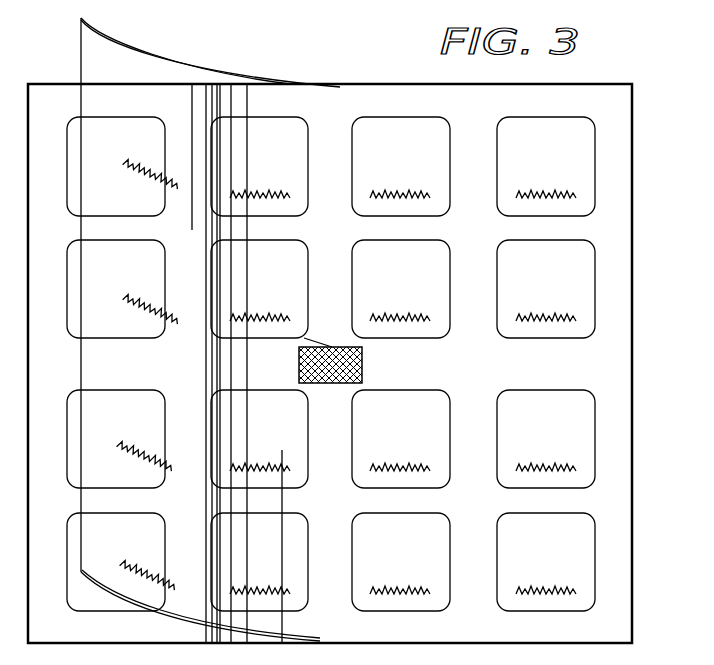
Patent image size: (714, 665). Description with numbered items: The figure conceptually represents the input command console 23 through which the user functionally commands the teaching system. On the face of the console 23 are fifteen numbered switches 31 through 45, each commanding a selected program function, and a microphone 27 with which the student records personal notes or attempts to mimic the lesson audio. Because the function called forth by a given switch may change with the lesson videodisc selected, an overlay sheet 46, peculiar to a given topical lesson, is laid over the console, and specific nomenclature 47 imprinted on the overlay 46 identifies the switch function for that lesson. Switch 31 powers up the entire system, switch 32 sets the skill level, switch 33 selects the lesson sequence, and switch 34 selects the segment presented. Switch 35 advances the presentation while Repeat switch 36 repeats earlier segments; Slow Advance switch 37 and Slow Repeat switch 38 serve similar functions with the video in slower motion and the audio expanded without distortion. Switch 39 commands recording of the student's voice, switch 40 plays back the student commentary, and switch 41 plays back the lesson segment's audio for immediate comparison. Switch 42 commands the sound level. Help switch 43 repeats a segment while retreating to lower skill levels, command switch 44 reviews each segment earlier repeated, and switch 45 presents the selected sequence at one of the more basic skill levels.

The input command console 23 is at (657, 264).
The microphone 27 is at (362, 365).
The switch 31 is at (245, 561).
The switch 32 is at (76, 135).
The switch 33 is at (245, 172).
The switch 34 is at (245, 294).
The switch 35 is at (385, 172).
The repeat switch 36 is at (385, 294).
The slow advance switch 37 is at (531, 172).
The slow repeat switch 38 is at (531, 294).
The switch 39 is at (75, 530).
The switch 40 is at (531, 561).
The switch 41 is at (385, 561).
The switch 42 is at (75, 258).
The help switch 43 is at (531, 437).
The command switch 44 is at (385, 437).
The switch 45 is at (245, 437).
The overlay sheet 46 is at (135, 63).
The nomenclature 47 is at (148, 168).